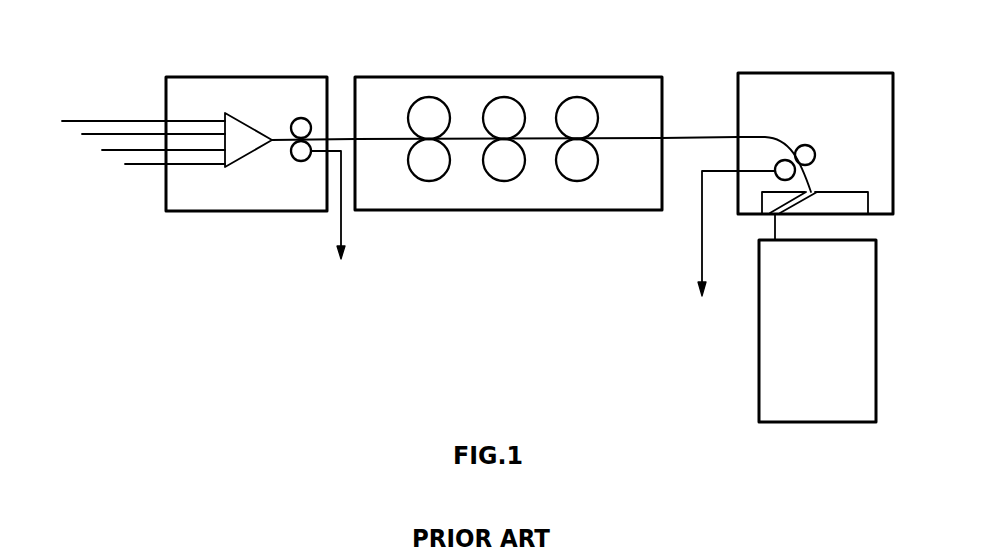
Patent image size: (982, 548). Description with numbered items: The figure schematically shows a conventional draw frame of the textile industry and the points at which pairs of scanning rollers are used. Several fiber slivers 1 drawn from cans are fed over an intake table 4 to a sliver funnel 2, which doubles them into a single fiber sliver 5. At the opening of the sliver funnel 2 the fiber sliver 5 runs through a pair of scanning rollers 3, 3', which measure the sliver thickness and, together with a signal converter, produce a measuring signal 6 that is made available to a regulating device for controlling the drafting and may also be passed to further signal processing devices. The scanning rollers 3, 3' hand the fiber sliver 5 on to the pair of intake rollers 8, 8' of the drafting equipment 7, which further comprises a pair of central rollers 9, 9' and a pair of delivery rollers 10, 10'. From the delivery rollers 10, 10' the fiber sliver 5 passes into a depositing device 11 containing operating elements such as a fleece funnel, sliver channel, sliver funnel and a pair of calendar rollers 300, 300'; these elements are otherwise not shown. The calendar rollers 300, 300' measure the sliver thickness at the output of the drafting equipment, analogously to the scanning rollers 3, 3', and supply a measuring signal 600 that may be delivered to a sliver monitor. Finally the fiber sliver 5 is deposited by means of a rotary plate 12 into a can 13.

The fiber slivers 1 is at (62, 121).
The sliver funnel 2 is at (240, 152).
The scanning roller 3 is at (296, 110).
The scanning roller 3' is at (300, 174).
The intake table 4 is at (233, 77).
The fiber sliver 5 is at (277, 138).
The measuring signal 6 is at (328, 221).
The drafting equipment 7 is at (592, 76).
The intake roller 8 is at (411, 110).
The intake roller 8' is at (413, 171).
The central roller 9 is at (492, 109).
The central roller 9' is at (490, 171).
The delivery roller 10 is at (595, 109).
The delivery roller 10' is at (597, 171).
The depositing device 11 is at (817, 73).
The calendar roller 300 is at (823, 133).
The calendar roller 300' is at (738, 161).
The rotary plate 12 is at (837, 192).
The can 13 is at (767, 365).
The measuring signal 600 is at (733, 250).